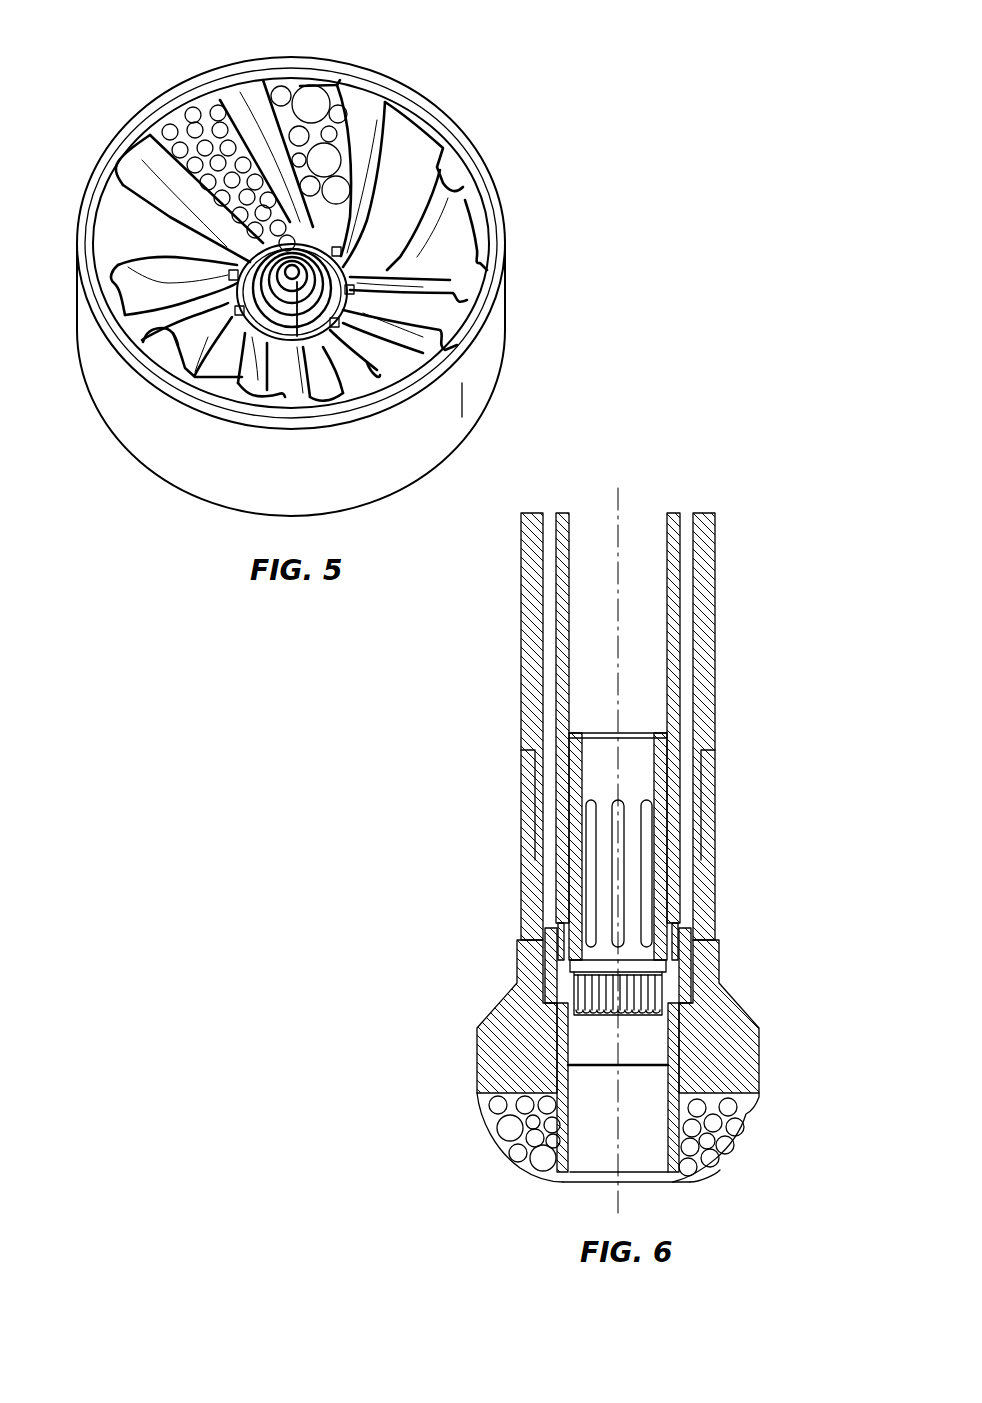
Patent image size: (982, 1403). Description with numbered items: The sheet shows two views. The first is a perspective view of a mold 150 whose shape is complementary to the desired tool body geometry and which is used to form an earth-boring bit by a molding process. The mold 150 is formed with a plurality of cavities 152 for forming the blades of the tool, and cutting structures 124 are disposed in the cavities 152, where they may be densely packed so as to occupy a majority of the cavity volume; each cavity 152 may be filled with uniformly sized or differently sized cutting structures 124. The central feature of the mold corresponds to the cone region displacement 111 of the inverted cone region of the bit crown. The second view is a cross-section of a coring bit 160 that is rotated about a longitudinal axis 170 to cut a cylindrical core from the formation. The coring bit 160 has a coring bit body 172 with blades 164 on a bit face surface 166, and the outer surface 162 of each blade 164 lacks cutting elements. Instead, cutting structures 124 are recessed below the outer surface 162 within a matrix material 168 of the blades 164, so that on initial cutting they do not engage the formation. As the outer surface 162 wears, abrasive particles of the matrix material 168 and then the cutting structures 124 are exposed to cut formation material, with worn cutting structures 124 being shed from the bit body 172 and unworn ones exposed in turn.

In FIG. 5, the cone region displacement 111 is at (335, 272).
In FIG. 5, the cutting structures 124 is at (213, 110).
In FIG. 6, the cutting structures 124 is at (500, 1142).
In FIG. 5, the mold 150 is at (477, 150).
In FIG. 5, the cavities 152 is at (133, 215).
In FIG. 6, the coring bit 160 is at (460, 1004).
In FIG. 6, the outer surface 162 is at (716, 1172).
In FIG. 6, the blade 164 is at (748, 1113).
In FIG. 6, the bit face surface 166 is at (695, 1195).
In FIG. 6, the matrix material 168 is at (480, 1088).
In FIG. 6, the longitudinal axis 170 is at (621, 511).
In FIG. 6, the coring bit body 172 is at (760, 1072).